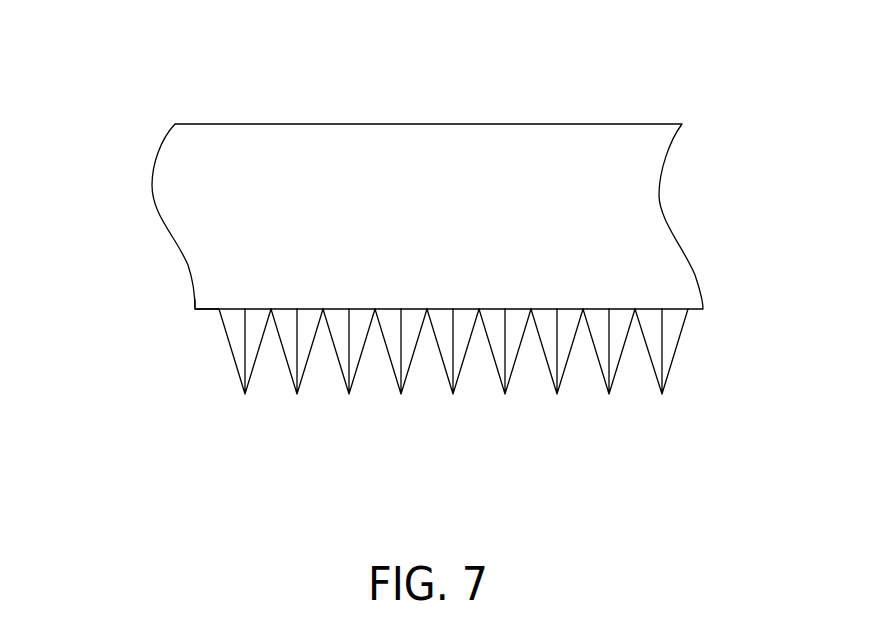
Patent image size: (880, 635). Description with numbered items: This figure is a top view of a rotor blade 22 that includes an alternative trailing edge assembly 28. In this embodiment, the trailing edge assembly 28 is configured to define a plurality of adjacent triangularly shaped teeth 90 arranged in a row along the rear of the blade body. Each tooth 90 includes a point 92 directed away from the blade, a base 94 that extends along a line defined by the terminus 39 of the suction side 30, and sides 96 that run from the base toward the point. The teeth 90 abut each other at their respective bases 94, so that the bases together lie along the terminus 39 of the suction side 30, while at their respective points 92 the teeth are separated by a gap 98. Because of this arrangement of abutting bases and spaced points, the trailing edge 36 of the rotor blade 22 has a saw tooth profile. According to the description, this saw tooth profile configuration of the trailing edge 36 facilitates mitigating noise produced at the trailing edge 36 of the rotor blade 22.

The rotor blade 22 is at (141, 81).
The trailing edge assembly 28 is at (454, 365).
The suction side 30 is at (418, 143).
The trailing edge 36 is at (296, 410).
The terminus 39 is at (208, 307).
The teeth 90 is at (230, 353).
The point 92 is at (505, 393).
The base 94 is at (505, 357).
The sides 96 is at (408, 370).
The gap 98 is at (636, 378).